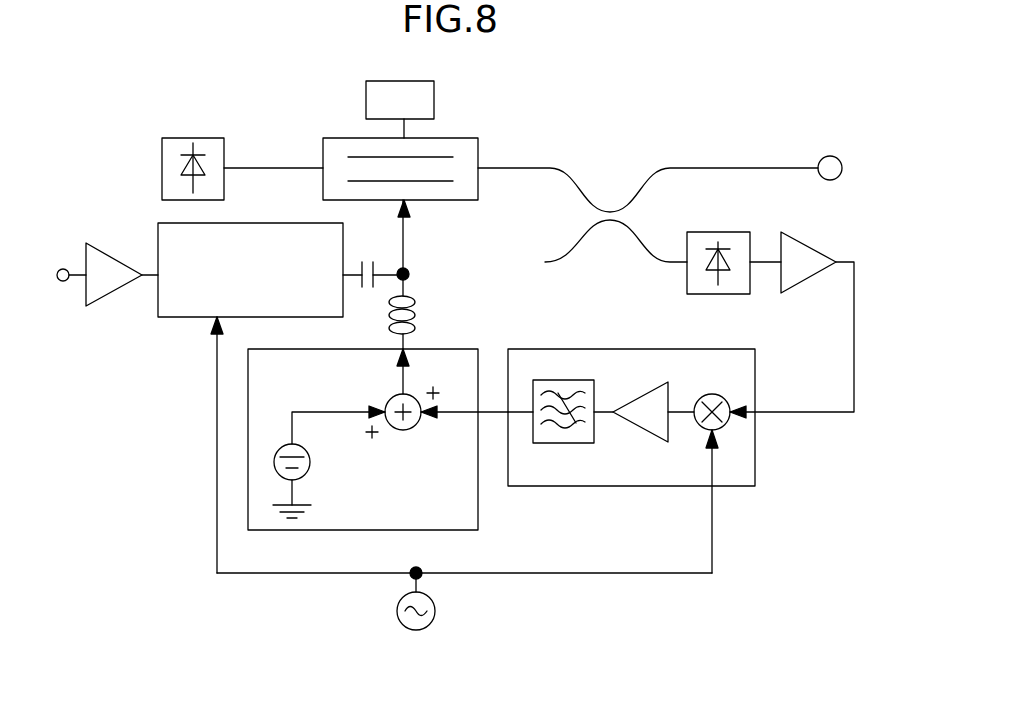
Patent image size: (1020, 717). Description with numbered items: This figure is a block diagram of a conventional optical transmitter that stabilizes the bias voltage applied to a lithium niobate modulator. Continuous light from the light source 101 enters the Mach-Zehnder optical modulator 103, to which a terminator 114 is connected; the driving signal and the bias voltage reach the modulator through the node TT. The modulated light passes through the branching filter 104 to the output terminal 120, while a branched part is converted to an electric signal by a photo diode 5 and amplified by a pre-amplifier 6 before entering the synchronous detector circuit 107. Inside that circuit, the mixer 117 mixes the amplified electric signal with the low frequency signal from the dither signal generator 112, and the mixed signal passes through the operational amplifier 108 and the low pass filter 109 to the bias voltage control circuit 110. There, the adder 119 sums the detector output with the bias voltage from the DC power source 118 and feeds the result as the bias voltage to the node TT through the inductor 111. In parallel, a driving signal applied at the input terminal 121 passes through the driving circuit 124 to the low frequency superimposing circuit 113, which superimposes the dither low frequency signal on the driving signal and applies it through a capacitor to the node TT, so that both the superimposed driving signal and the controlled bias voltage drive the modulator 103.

The light source 101 is at (208, 143).
The Mach-Zehnder optical modulator 103 is at (452, 144).
The terminator 114 is at (418, 88).
The branching filter 104 is at (603, 197).
The output terminal 120 is at (831, 156).
The photodiode 5 is at (730, 241).
The amplifier 6 is at (813, 251).
The synchronous detector circuit 107 is at (603, 478).
The low pass filter 109 is at (565, 437).
The operational amplifier 108 is at (650, 430).
The mixer 117 is at (711, 394).
The bias voltage control circuit 110 is at (342, 523).
The adder 119 is at (410, 430).
The DC power source 118 is at (310, 462).
The inductor 111 is at (417, 315).
The node TT is at (412, 272).
The low frequency superimposing circuit 113 is at (283, 230).
The driving circuit 124 is at (113, 264).
The input terminal 121 is at (63, 269).
The dither signal generator 112 is at (430, 607).